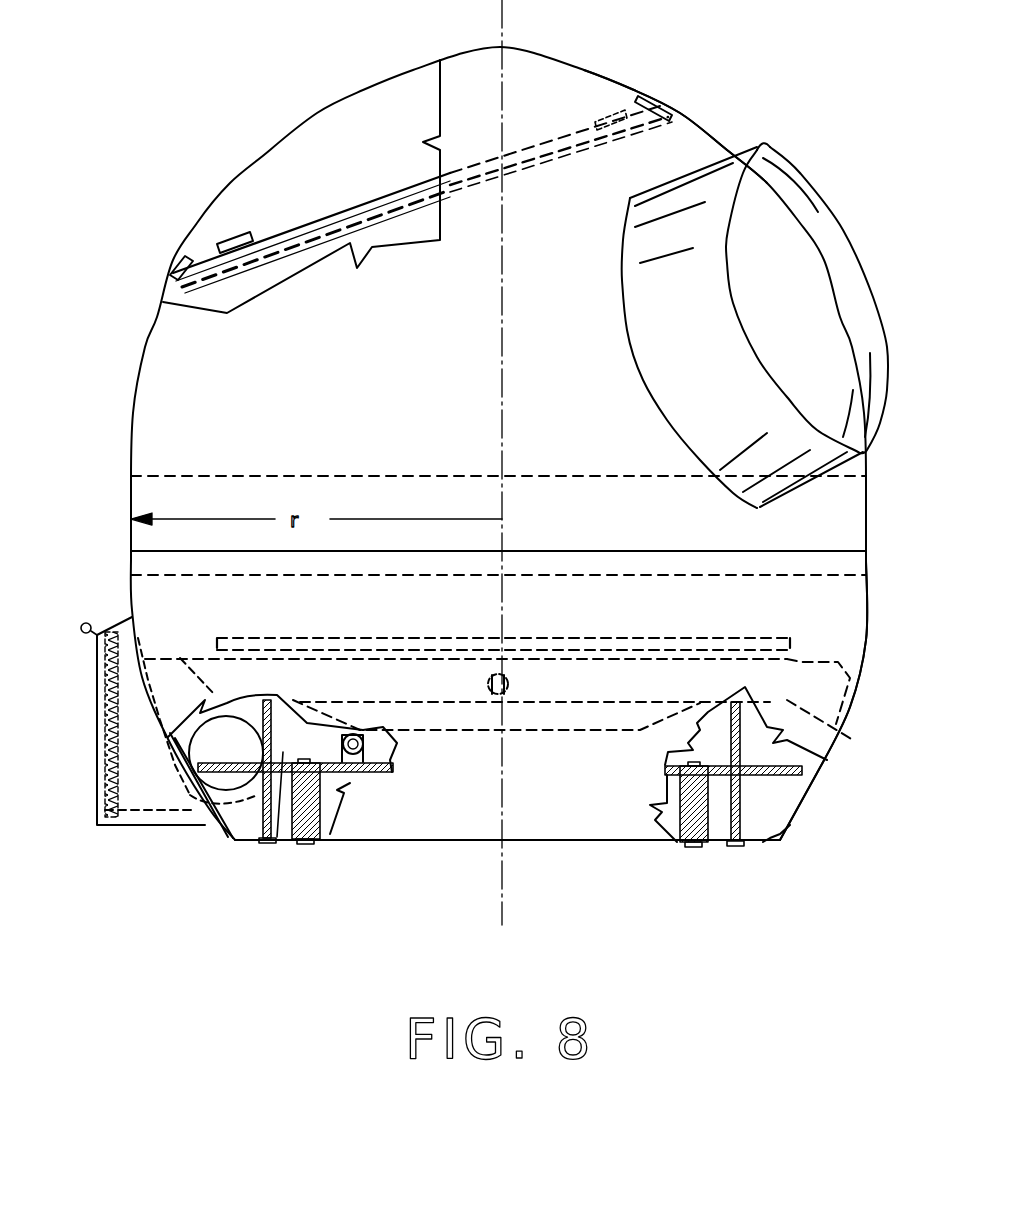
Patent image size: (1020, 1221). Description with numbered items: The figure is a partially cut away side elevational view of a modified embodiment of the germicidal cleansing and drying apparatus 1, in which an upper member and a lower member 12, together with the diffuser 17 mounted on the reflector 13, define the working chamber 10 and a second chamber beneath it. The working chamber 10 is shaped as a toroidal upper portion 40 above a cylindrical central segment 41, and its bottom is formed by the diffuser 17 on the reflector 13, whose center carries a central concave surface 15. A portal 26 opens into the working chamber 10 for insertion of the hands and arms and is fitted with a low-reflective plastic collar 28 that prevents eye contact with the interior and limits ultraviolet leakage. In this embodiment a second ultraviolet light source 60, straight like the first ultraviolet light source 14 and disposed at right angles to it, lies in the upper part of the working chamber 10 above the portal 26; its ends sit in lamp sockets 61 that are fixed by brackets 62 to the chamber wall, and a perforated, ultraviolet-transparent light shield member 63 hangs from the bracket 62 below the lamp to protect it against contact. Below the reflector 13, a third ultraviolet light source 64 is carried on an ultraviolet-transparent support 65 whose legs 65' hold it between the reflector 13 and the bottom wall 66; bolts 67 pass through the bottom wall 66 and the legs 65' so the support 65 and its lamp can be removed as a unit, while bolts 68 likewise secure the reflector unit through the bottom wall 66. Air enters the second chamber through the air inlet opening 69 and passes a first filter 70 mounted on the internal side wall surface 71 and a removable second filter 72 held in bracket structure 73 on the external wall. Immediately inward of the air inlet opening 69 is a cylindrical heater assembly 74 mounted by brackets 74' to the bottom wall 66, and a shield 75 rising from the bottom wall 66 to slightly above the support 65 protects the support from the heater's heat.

The germicidal cleansing and drying apparatus 1 is at (172, 283).
The working chamber 10 is at (378, 413).
The lower member 12 is at (852, 712).
The reflector 13 is at (858, 740).
The first ultraviolet light source 14 is at (508, 680).
The central concave surface 15 is at (640, 735).
The diffuser 17 is at (342, 632).
The portal 26 is at (623, 303).
The plastic collar 28 is at (857, 240).
The upper portion 40 is at (716, 140).
The central segment 41 is at (866, 542).
The second ultraviolet light source 60 is at (418, 185).
The lamp socket 61 is at (228, 240).
The bracket 62 is at (178, 268).
The light shield member 63 is at (332, 235).
The third ultraviolet light source 64 is at (365, 736).
The support 65 is at (592, 760).
The legs 65' is at (726, 826).
The bottom wall 66 is at (565, 842).
The bolts 67 is at (700, 845).
The bolts 68 is at (743, 808).
The air inlet opening 69 is at (181, 818).
The first filter 70 is at (150, 717).
The internal side wall surface 71 is at (240, 812).
The second filter 72 is at (107, 682).
The bracket structure 73 is at (137, 813).
The cylindrical heater assembly 74 is at (265, 729).
The brackets 74' is at (265, 787).
The shield 75 is at (300, 818).